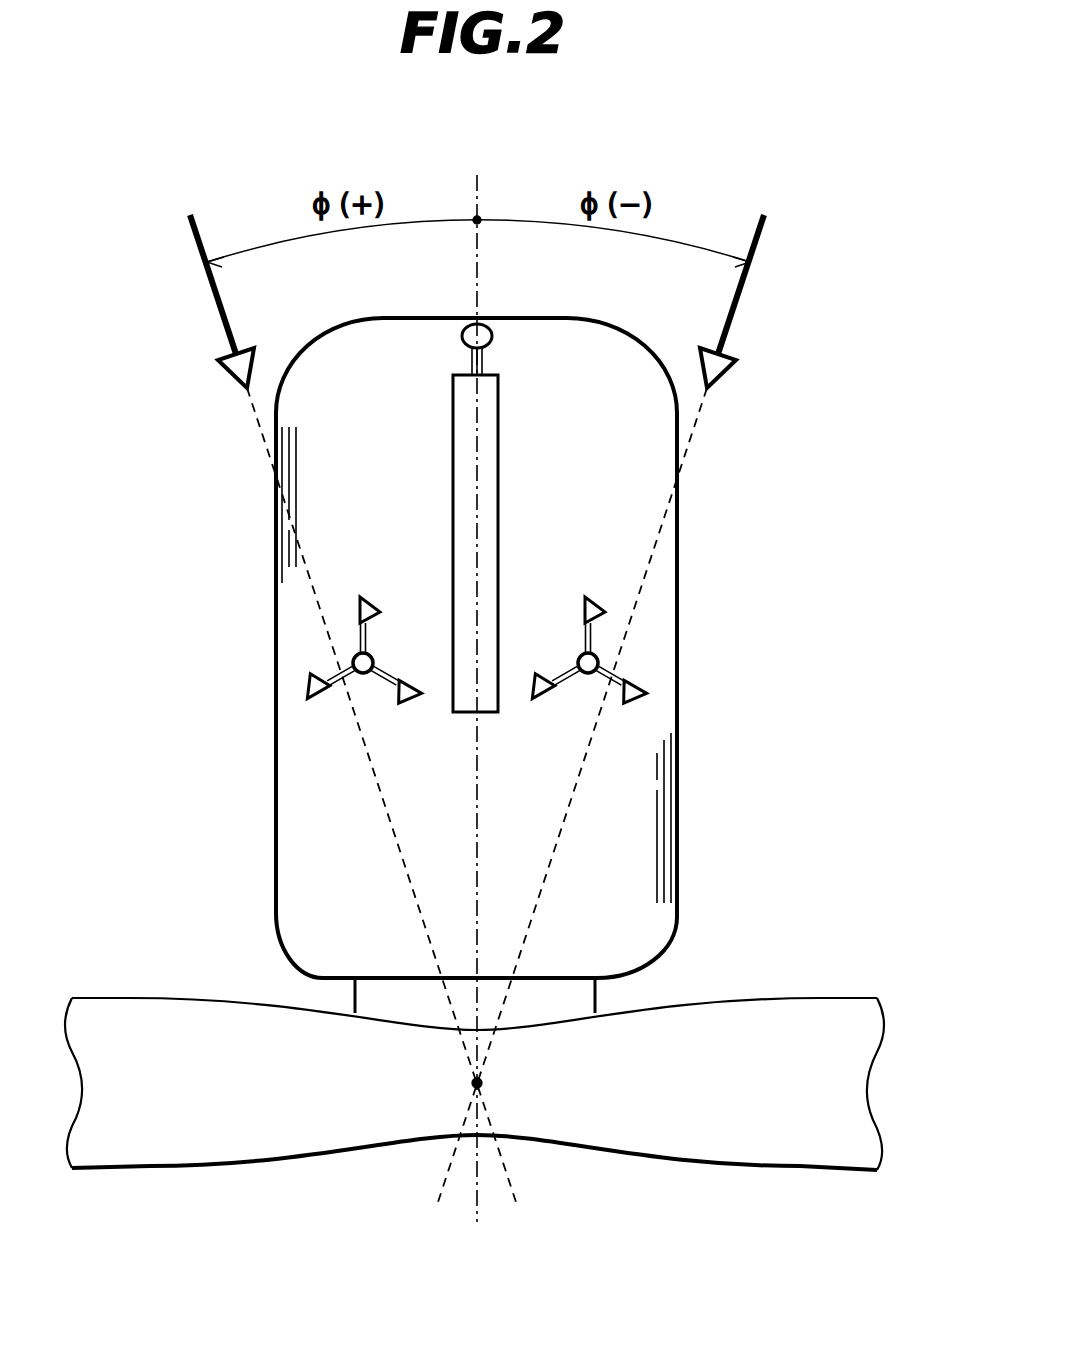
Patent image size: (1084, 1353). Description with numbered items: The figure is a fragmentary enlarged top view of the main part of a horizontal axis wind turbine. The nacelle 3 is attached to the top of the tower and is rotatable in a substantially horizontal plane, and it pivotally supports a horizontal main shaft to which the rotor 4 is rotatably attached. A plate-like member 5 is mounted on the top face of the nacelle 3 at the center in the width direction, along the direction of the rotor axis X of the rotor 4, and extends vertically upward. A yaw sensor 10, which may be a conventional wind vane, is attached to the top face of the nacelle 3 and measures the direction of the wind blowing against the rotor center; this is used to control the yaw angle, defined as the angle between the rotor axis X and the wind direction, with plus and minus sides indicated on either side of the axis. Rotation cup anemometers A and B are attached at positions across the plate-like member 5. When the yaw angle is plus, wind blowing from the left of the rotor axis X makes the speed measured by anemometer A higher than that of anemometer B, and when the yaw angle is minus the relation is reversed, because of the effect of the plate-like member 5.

The nacelle 3 is at (291, 851).
The rotor 4 is at (770, 1024).
The plate-like member 5 is at (492, 504).
The yaw sensor 10 is at (473, 324).
The anemometer A is at (337, 648).
The anemometer B is at (615, 648).
The rotor axis X is at (480, 180).